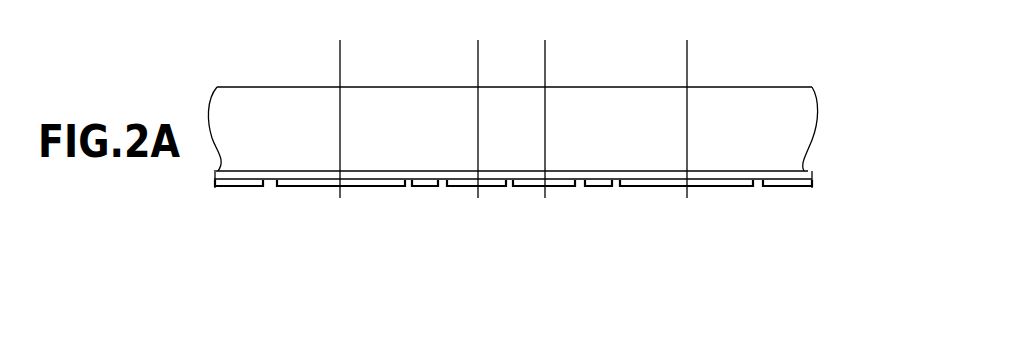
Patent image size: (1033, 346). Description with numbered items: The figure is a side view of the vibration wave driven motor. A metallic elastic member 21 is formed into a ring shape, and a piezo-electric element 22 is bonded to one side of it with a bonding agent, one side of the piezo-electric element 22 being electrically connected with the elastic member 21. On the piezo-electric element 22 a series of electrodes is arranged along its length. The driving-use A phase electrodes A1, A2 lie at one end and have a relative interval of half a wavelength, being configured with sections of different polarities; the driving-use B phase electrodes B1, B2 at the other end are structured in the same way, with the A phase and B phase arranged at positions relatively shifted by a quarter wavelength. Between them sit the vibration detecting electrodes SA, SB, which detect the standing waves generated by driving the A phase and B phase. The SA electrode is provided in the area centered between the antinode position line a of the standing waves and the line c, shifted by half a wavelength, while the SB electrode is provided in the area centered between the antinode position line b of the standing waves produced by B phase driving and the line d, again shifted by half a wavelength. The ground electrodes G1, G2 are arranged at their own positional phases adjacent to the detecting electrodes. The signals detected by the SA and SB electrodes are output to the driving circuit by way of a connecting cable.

The elastic member 21 is at (806, 141).
The piezo-electric element 22 is at (810, 177).
The driving-use A phase electrode A1 is at (292, 189).
The driving-use A phase electrode A2 is at (223, 189).
The ground electrode G1 is at (428, 189).
The ground electrode G2 is at (602, 189).
The vibration detecting electrode SA is at (497, 189).
The vibration detecting electrode SB is at (563, 189).
The driving-use B phase electrode B1 is at (718, 189).
The driving-use B phase electrode B2 is at (783, 189).
The antinode position line a-a' a is at (344, 119).
The antinode position line b-b' b is at (691, 119).
The line c-c' c is at (482, 119).
The line d-d' d is at (551, 119).